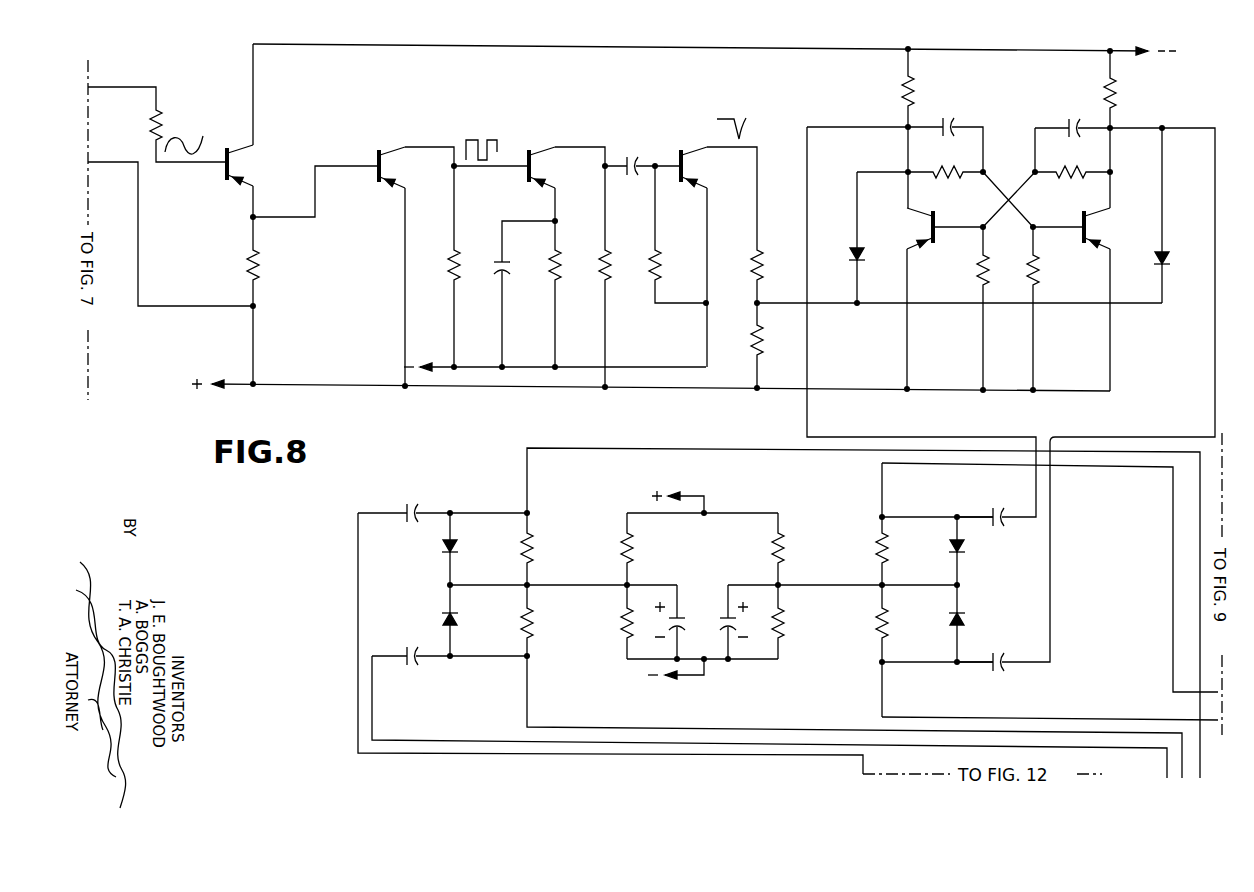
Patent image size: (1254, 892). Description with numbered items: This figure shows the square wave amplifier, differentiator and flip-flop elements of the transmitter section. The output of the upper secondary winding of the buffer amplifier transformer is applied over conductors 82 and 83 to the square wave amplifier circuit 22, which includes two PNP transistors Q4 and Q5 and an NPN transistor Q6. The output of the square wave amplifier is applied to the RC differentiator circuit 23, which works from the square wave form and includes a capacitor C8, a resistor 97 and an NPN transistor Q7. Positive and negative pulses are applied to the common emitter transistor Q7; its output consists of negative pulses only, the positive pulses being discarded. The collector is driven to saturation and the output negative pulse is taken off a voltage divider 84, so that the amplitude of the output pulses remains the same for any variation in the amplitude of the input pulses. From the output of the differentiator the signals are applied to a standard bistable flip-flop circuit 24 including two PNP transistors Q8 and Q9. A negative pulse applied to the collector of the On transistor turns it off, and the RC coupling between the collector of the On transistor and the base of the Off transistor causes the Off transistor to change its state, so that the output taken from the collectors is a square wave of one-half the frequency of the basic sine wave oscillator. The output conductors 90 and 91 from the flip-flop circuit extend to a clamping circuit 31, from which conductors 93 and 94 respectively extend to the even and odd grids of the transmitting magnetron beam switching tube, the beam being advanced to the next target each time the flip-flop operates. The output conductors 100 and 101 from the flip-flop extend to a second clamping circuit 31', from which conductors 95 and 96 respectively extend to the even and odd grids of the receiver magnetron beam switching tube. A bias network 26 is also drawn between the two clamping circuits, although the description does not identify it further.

The conductor 82 is at (97, 87).
The conductor 83 is at (99, 163).
The PNP transistor Q4 is at (232, 168).
The square wave amplifier circuit 22 is at (418, 116).
The PNP transistor Q5 is at (384, 168).
The NPN transistor Q6 is at (534, 168).
The RC differentiator circuit 23 is at (680, 116).
The capacitor C8 is at (632, 154).
The NPN transistor Q7 is at (686, 168).
The resistor 97 is at (660, 268).
The voltage divider 84 is at (762, 268).
The bistable flip-flop circuit 24 is at (1024, 110).
The PNP transistor Q8 is at (926, 229).
The PNP transistor Q9 is at (1090, 229).
The output conductor 90 is at (851, 127).
The output conductor 91 is at (1191, 128).
The conductor 95 is at (541, 448).
The clamping circuit 31' is at (445, 558).
The bias voltage divider 26 is at (716, 485).
The clamping circuit 31 is at (934, 590).
The output conductor 100 is at (361, 536).
The output conductor 101 is at (374, 698).
The conductor 96 is at (529, 676).
The conductor 93 is at (1172, 590).
The conductor 94 is at (1138, 720).